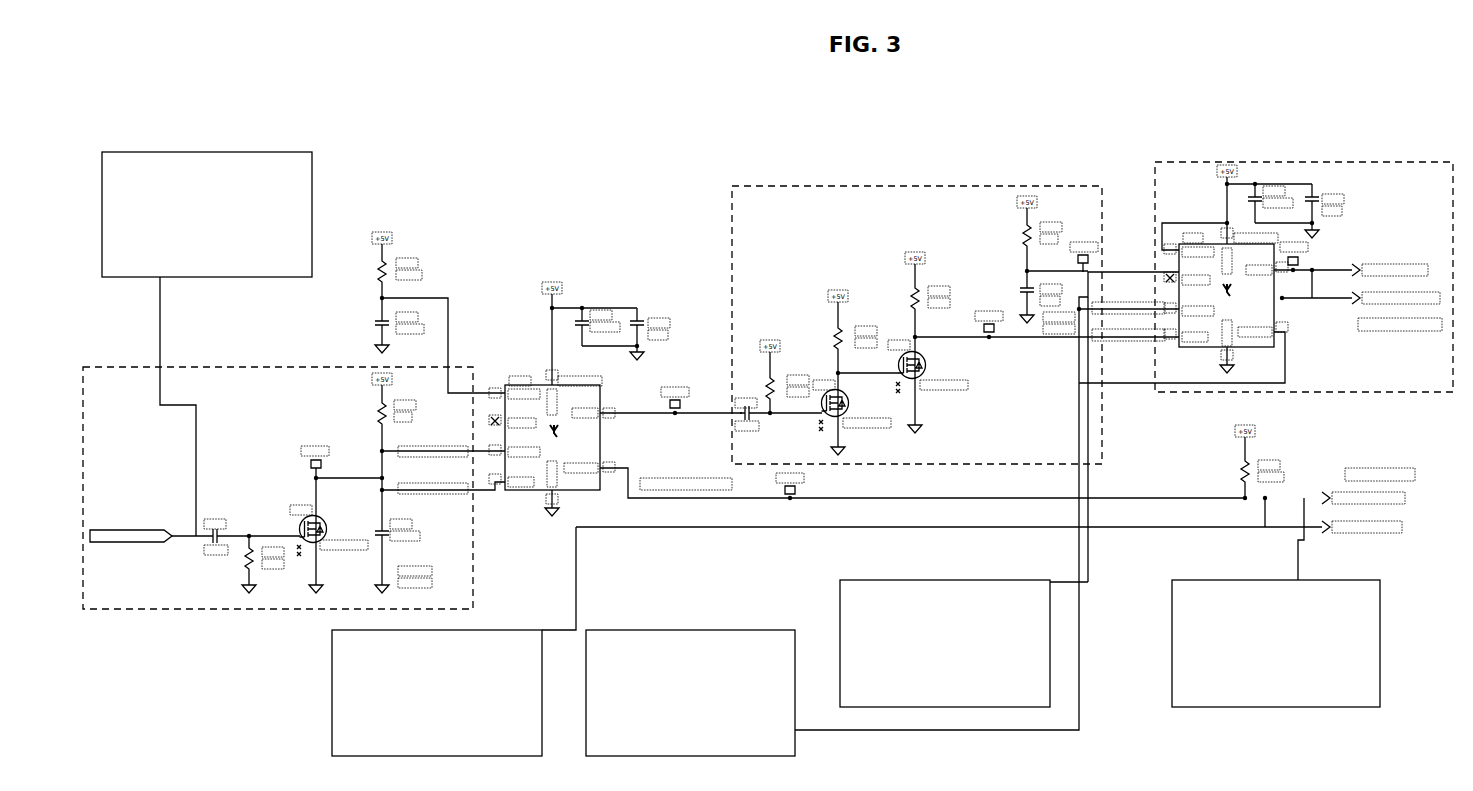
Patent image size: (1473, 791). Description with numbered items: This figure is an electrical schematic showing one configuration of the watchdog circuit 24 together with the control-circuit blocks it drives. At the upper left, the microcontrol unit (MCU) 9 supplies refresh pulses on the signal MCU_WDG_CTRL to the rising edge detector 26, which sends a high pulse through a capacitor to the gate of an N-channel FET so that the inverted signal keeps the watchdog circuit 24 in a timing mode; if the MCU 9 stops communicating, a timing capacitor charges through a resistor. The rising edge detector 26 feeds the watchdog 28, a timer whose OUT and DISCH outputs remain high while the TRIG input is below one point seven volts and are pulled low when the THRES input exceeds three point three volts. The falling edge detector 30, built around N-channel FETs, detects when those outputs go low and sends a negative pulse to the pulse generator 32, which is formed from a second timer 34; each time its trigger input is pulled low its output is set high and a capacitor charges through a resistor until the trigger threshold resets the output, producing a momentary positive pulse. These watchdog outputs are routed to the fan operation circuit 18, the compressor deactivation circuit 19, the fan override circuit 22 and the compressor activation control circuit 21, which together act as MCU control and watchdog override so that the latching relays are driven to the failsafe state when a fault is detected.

The microcontrol unit (MCU) 9 is at (145, 150).
The watchdog circuit 24 is at (635, 205).
The rising edge detector 26 is at (278, 615).
The watchdog 28 is at (587, 492).
The falling edge detector 30 is at (971, 186).
The pulse generator 32 is at (1287, 161).
The second timer 34 is at (1290, 300).
The fan operation circuit 18 is at (486, 630).
The compressor deactivation circuit 19 is at (703, 630).
The fan override circuit 22 is at (877, 580).
The compressor activation control circuit 21 is at (1330, 580).